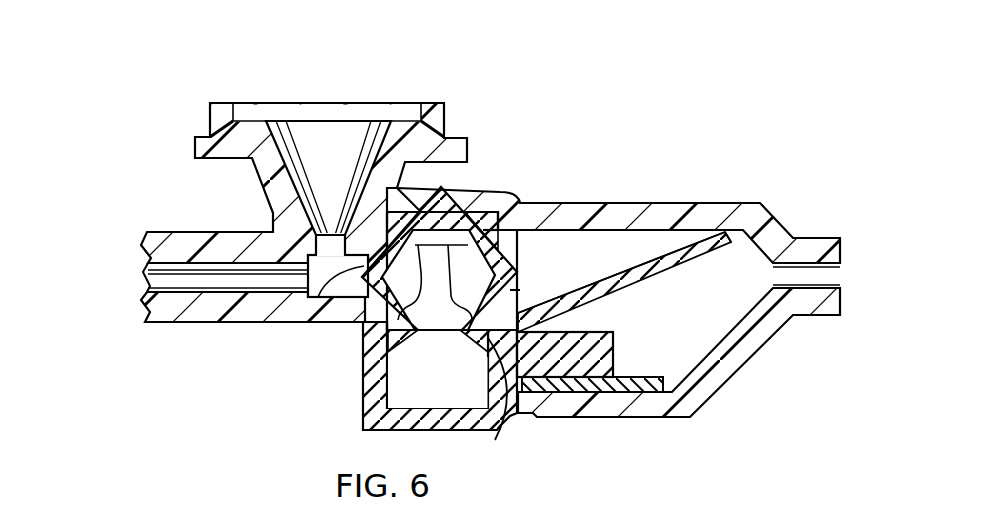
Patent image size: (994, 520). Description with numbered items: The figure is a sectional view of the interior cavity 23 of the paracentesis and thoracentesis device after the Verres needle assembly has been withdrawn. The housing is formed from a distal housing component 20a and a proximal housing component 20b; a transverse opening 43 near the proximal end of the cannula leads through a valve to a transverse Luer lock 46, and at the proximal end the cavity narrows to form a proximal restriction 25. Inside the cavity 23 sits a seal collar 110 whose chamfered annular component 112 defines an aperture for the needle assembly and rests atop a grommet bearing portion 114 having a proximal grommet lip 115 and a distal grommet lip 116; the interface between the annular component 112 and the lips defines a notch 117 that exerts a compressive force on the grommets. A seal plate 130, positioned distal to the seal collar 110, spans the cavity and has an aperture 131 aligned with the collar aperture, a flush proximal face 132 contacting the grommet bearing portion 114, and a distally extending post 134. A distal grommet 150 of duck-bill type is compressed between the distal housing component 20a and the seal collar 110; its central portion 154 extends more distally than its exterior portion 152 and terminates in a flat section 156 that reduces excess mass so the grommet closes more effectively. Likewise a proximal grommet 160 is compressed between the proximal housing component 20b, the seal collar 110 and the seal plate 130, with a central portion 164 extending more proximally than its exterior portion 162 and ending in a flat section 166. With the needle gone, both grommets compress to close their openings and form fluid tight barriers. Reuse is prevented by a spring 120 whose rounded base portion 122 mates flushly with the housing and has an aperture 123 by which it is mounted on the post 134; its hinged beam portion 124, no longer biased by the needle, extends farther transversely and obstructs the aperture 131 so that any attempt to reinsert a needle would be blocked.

The transverse Luer lock 46 is at (192, 102).
The transverse opening (side drainage port) 43 is at (343, 163).
The distal housing component 20a is at (430, 193).
The proximal housing component 20b is at (597, 205).
The annular component 112 is at (457, 190).
The seal collar 110 is at (440, 227).
The proximal grommet 160 is at (483, 233).
The central portion 164 is at (527, 258).
The flat section 166 is at (527, 273).
The aperture 131 is at (520, 290).
The notch 117 is at (439, 269).
The aperture 123 is at (556, 323).
The interior cavity 23 is at (690, 308).
The beam portion 124 is at (715, 248).
The proximal restriction 25 is at (817, 278).
The spring 120 is at (647, 293).
The flat section 156 is at (326, 300).
The central portion 154 is at (351, 300).
The distal grommet 150 is at (370, 323).
The exterior portion 152 is at (366, 375).
The proximal grommet lip 115 is at (367, 427).
The distal grommet lip 116 is at (437, 370).
The grommet bearing portion 114 is at (469, 387).
The flush proximal face 132 is at (478, 420).
The exterior portion 162 is at (495, 404).
The seal plate 130 is at (523, 382).
The distally extending post 134 is at (595, 380).
The base portion 122 is at (637, 390).